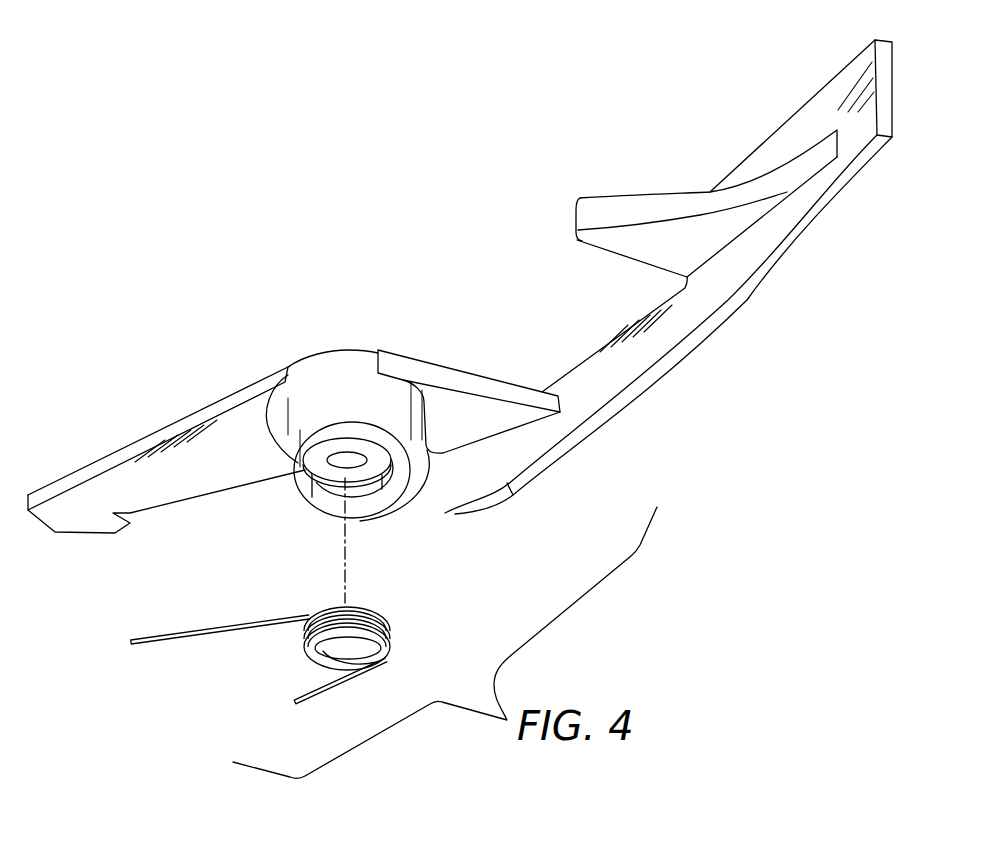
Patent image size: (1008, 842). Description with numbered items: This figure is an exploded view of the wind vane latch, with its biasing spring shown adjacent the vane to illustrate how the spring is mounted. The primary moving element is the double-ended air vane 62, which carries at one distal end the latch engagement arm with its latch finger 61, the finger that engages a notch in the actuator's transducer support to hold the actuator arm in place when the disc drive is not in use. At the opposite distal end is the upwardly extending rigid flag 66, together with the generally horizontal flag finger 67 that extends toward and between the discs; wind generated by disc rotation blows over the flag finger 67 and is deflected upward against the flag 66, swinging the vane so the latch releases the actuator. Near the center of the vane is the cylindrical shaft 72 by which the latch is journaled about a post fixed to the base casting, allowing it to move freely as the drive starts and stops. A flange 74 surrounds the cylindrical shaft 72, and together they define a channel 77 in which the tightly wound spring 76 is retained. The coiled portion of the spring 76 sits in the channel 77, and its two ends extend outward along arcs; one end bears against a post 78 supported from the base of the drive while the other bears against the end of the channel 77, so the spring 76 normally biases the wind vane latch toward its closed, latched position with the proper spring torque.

The latch finger 61 is at (102, 528).
The air vane 62 is at (420, 342).
The flag 66 is at (823, 102).
The flag finger 67 is at (593, 233).
The cylindrical shaft 72 is at (312, 472).
The flange 74 is at (412, 473).
The spring 76 is at (238, 630).
The channel 77 is at (328, 493).
The post 78 is at (403, 640).